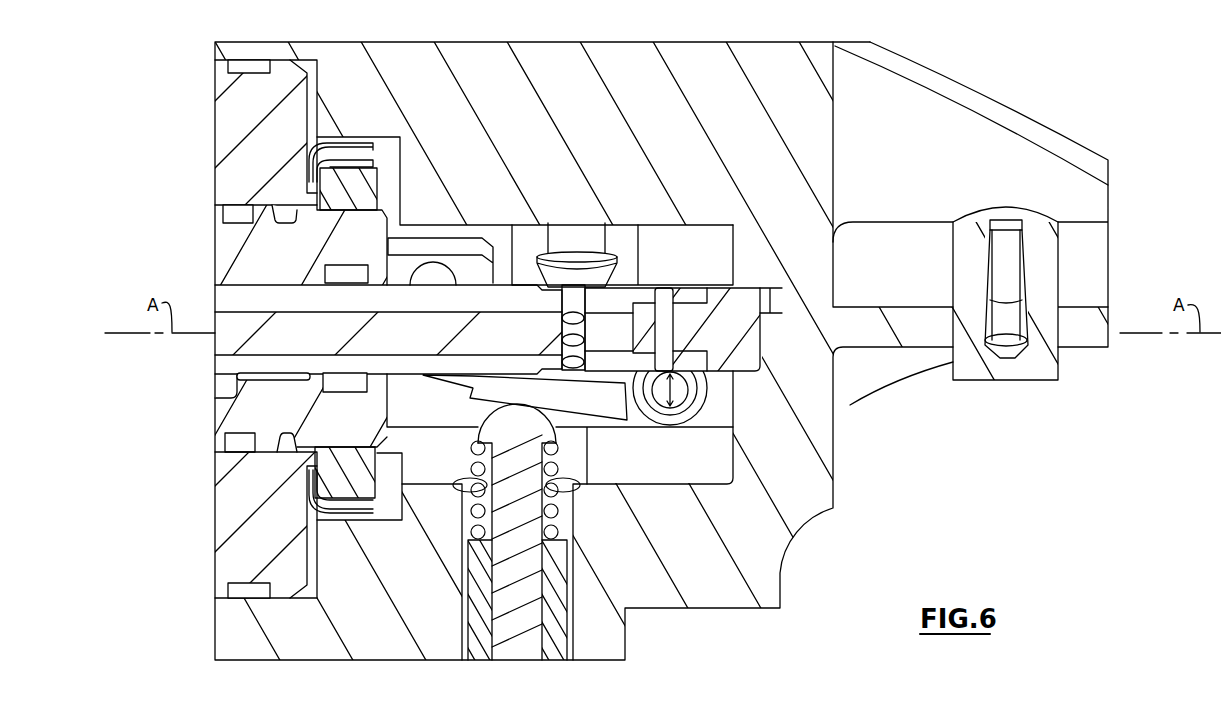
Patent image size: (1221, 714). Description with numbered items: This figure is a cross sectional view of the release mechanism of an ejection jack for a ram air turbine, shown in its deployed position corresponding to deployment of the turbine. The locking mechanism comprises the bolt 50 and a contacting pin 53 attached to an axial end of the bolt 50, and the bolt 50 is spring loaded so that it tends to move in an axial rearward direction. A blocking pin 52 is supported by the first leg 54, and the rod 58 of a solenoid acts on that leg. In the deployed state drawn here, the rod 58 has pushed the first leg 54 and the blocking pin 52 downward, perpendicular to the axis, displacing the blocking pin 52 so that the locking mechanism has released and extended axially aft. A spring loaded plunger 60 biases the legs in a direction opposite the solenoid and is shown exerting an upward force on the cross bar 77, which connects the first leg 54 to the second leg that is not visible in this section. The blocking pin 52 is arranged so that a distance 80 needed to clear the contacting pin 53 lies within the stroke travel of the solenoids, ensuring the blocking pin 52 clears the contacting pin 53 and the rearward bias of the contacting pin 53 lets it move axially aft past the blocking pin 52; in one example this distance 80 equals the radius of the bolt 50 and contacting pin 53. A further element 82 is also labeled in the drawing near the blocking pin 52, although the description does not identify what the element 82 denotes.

The bolt 50 is at (612, 297).
The blocking pin 52 is at (680, 387).
The contacting pin 53 is at (740, 343).
The first leg 54 is at (680, 412).
The rod 58 is at (567, 238).
The spring loaded plunger 60 is at (520, 480).
The cross bar 77 is at (573, 403).
The distance 80 is at (778, 300).
The pivot pin 82 is at (663, 403).